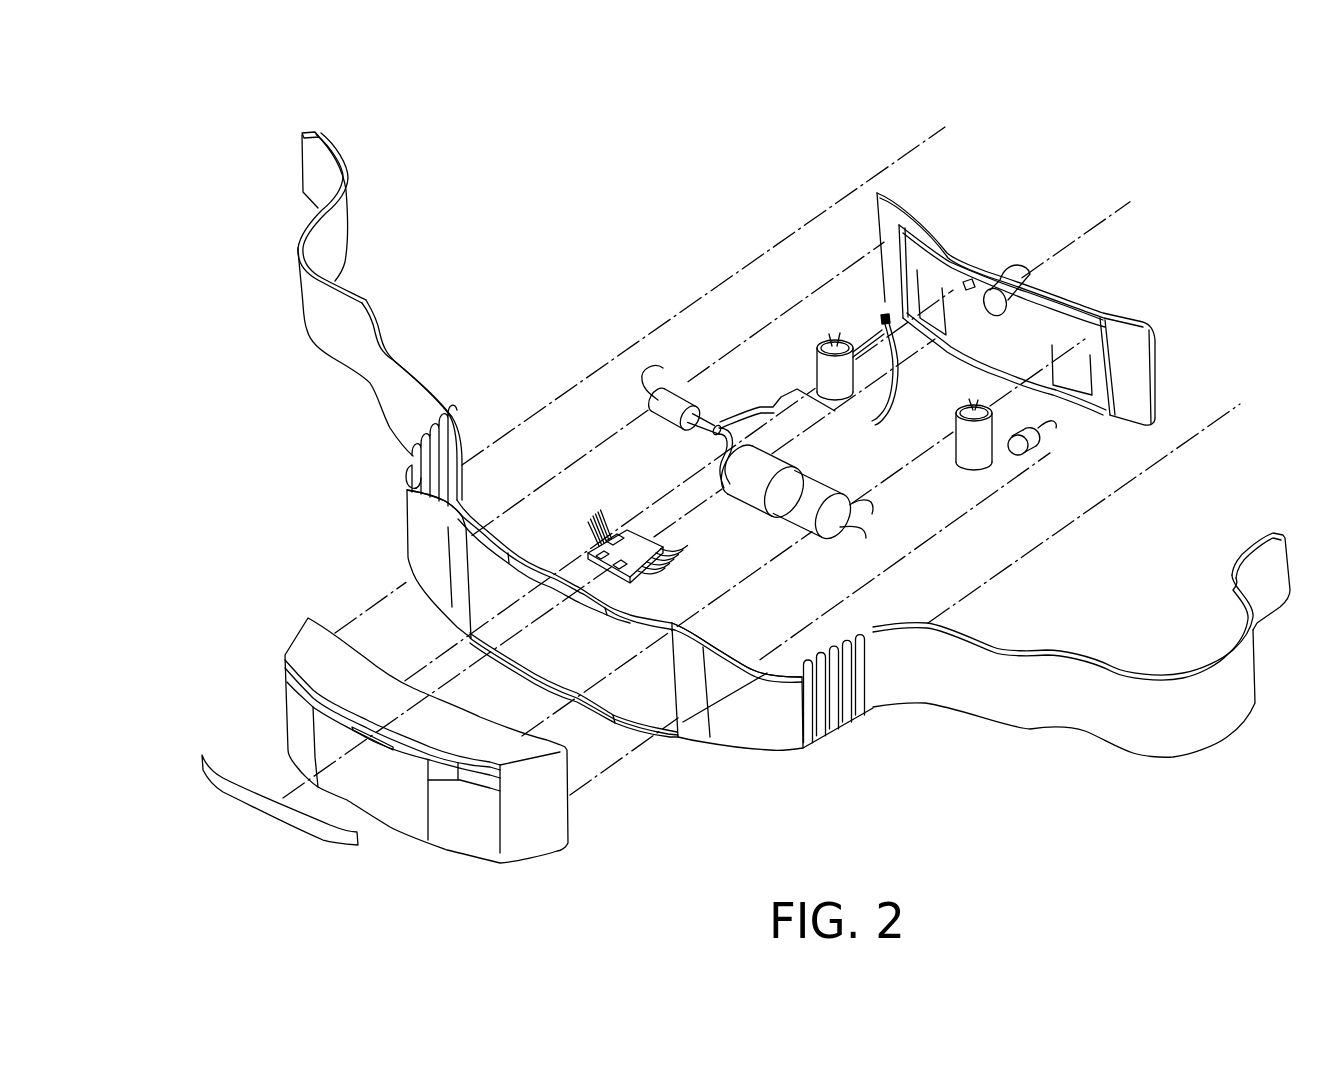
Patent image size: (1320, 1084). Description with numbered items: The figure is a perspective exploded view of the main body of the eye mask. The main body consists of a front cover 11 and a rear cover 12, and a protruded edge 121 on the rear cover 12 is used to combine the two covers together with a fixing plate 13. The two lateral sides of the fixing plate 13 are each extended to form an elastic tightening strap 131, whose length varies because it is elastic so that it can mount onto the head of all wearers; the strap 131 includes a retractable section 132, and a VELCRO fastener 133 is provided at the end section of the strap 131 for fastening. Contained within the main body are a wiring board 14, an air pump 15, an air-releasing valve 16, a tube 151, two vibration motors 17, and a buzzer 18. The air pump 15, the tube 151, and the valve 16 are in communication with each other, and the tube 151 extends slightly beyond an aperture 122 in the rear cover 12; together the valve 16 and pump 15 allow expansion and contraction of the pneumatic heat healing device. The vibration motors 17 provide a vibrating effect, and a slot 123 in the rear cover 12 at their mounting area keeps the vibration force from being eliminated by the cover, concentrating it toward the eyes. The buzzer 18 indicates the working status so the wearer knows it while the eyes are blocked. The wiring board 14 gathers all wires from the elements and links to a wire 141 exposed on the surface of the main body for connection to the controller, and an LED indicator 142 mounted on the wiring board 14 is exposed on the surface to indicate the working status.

The front cover 11 is at (450, 835).
The rear cover 12 is at (1127, 325).
The protruded edge 121 is at (1112, 416).
The aperture 122 is at (1017, 268).
The slot 123 is at (1078, 400).
The fixing plate 13 is at (733, 747).
The elastic tightening strap 131 is at (1055, 707).
The retractable section 132 is at (848, 727).
The VELCRO fastener 133 is at (1245, 550).
The wiring board 14 is at (637, 547).
The wire 141 is at (913, 380).
The LED indicator 142 is at (587, 537).
The air pump 15 is at (757, 487).
The tube 151 is at (738, 392).
The air-releasing valve 16 is at (677, 388).
The vibration motor 17 is at (958, 462).
The buzzer 18 is at (1027, 455).